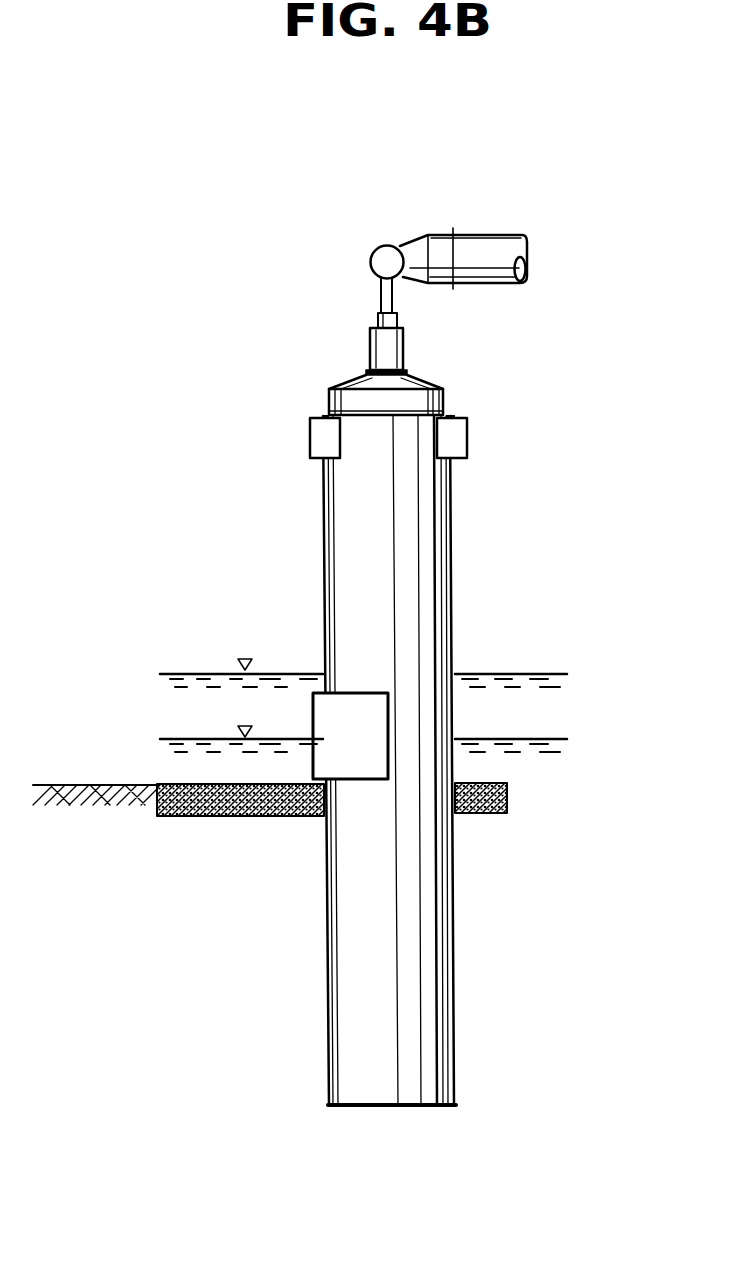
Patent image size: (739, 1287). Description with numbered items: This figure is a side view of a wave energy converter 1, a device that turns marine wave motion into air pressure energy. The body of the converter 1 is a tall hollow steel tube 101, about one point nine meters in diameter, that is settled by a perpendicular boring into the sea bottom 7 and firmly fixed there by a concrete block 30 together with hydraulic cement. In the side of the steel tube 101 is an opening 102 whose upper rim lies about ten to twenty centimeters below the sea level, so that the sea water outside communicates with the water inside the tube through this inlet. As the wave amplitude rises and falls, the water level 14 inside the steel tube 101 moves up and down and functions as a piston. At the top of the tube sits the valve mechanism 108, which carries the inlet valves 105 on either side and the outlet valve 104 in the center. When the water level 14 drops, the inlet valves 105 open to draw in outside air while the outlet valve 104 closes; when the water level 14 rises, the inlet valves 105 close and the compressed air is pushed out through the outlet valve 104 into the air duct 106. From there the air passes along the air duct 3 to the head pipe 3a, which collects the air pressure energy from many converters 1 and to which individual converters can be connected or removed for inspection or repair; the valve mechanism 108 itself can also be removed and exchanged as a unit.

The wave energy converter 1 is at (381, 691).
The air duct 3 is at (491, 248).
The head pipe 3a is at (387, 255).
The sea bottom 7 is at (103, 785).
The water level 14 is at (517, 673).
The concrete block 30 is at (240, 816).
The steel tube 101 is at (433, 603).
The opening 102 is at (323, 715).
The outlet valve 104 is at (362, 350).
The inlet valve 105 is at (318, 437).
The air duct 106 is at (377, 316).
The valve mechanism 108 is at (448, 375).